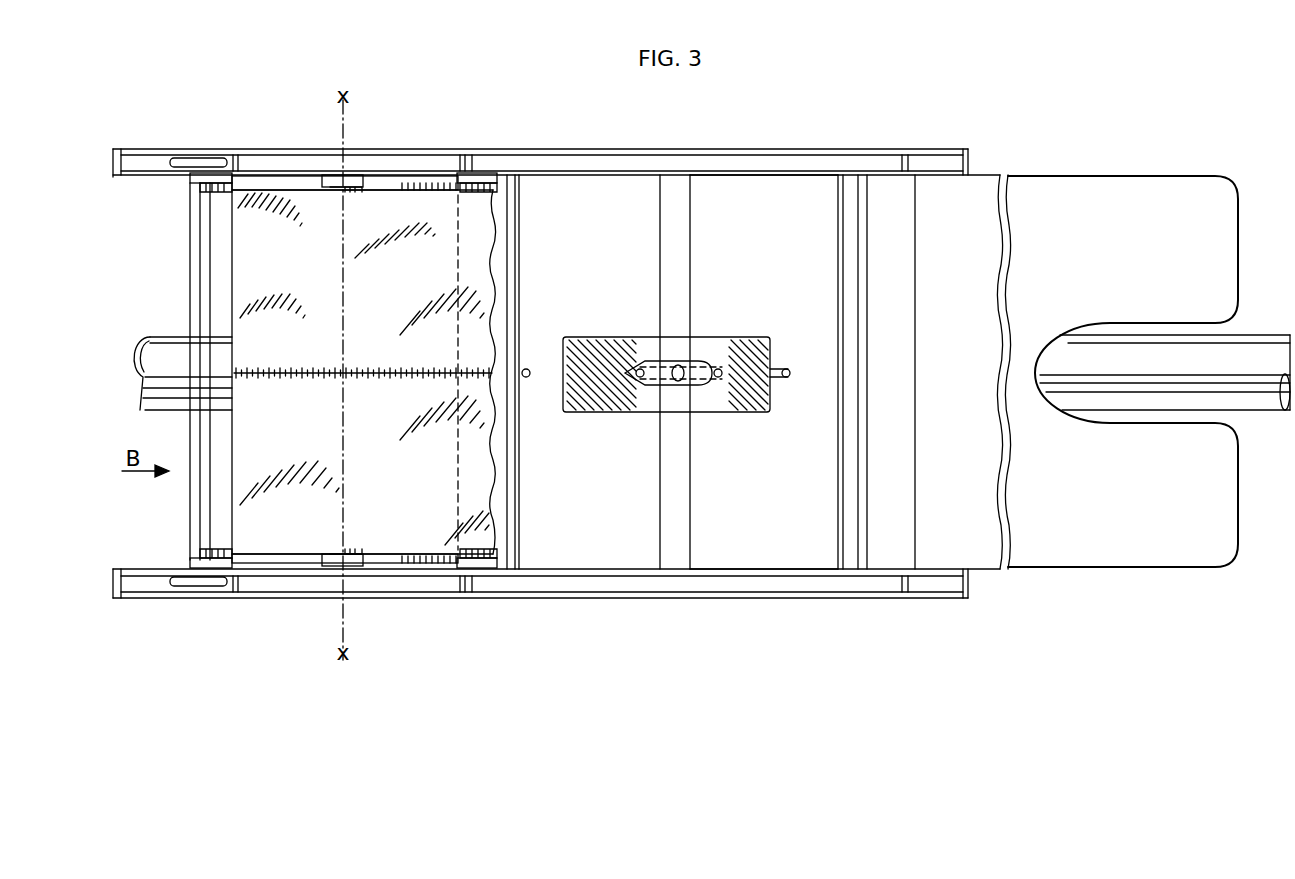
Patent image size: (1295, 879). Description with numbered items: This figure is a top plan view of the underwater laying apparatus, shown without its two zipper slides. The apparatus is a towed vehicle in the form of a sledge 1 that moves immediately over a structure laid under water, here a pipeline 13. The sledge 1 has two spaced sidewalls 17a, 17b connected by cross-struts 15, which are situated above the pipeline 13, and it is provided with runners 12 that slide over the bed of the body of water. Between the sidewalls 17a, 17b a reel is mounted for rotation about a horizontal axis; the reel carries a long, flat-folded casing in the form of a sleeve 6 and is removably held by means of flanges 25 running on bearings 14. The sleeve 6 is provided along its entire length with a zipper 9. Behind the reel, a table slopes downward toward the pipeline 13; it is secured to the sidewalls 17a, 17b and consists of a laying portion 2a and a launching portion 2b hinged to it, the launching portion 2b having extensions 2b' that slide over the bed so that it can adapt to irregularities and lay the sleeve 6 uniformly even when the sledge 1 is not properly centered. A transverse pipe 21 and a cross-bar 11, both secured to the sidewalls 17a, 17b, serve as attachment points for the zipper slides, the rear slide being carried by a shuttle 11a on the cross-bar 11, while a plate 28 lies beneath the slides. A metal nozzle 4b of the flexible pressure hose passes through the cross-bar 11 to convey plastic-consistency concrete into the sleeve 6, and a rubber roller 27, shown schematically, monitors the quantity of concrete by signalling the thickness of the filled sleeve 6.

The sledge 1 is at (560, 146).
The laying portion 2a is at (802, 197).
The launching portion 2b is at (963, 335).
The extensions 2b' is at (1147, 371).
The metal nozzle 4b is at (782, 378).
The sleeve 6 is at (483, 252).
The zipper 9 is at (283, 380).
The cross-bar 11 is at (682, 237).
The shuttle 11a is at (700, 362).
The runners 12 is at (893, 150).
The pipeline 13 is at (1170, 353).
The bearings 14 is at (206, 170).
The cross-struts 15 is at (200, 272).
The sidewall 17a is at (733, 580).
The sidewall 17b is at (726, 160).
The transverse pipe 21 is at (514, 473).
The flanges 25 is at (278, 185).
The rubber roller 27 is at (857, 254).
The plate 28 is at (604, 395).